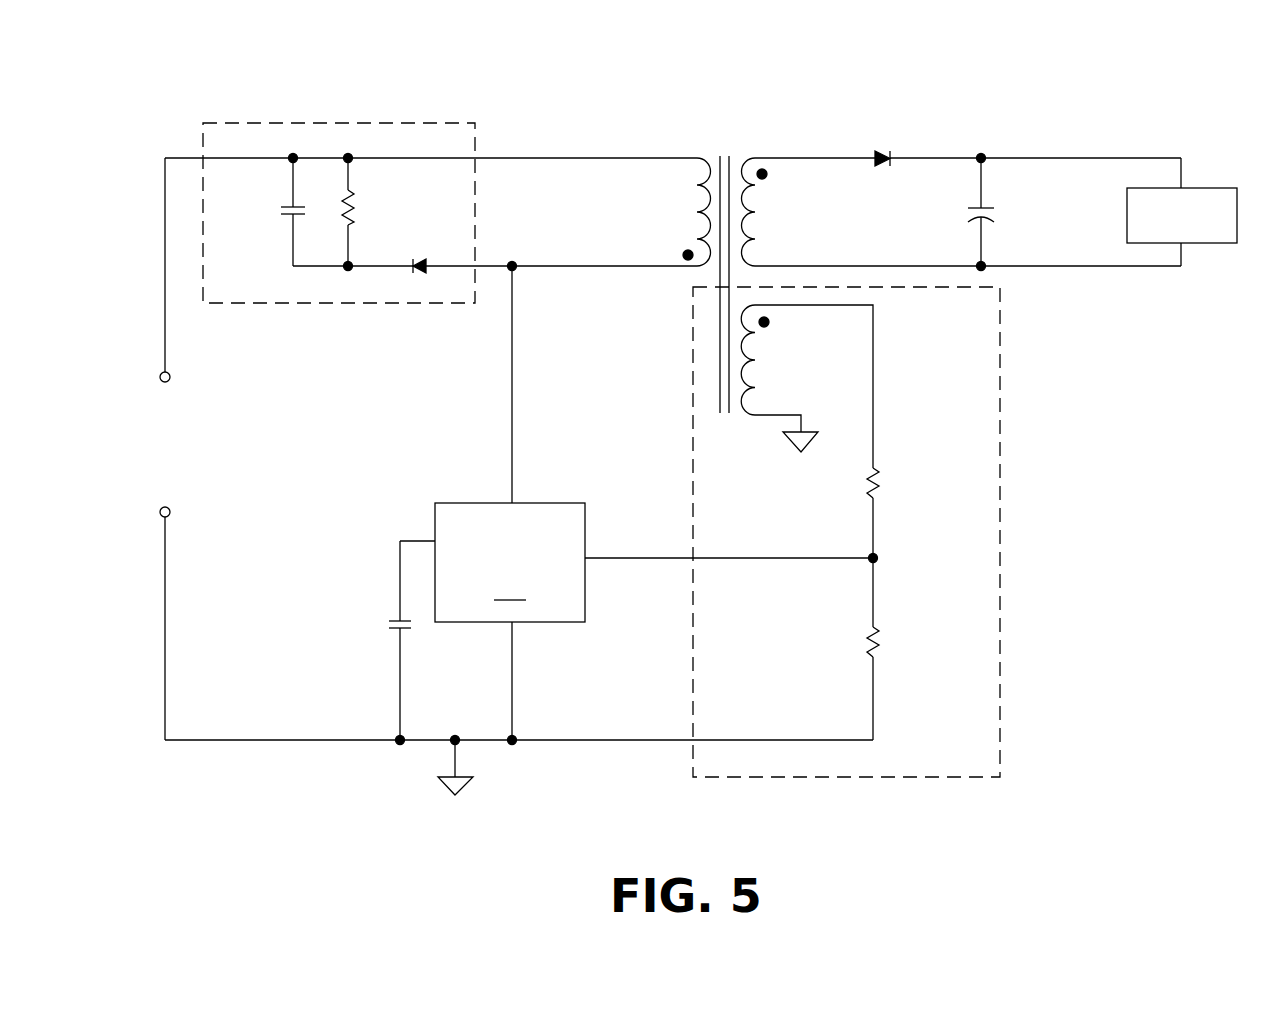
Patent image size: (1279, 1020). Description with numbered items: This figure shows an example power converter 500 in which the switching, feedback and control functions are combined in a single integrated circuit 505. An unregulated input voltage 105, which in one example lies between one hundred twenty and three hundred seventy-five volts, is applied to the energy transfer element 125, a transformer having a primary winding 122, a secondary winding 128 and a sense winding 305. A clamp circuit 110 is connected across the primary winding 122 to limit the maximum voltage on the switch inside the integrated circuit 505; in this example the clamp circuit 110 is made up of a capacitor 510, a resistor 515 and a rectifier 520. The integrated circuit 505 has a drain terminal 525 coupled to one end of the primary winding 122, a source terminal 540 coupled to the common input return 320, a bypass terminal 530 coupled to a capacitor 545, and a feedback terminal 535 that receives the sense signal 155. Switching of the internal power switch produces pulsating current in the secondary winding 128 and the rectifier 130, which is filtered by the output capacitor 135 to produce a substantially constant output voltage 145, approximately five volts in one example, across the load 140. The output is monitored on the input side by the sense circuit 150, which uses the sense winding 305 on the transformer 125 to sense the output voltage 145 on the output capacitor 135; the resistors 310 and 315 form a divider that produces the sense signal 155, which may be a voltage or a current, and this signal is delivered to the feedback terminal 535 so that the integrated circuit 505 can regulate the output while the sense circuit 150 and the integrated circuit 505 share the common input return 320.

The power converter 500 is at (586, 69).
The input voltage V_IN 105 is at (135, 443).
The clamp circuit 110 is at (360, 245).
The capacitor 510 is at (276, 207).
The resistor 515 is at (362, 207).
The rectifier 520 is at (421, 258).
The primary winding 122 is at (682, 209).
The energy transfer element T1 125 is at (728, 147).
The secondary winding 128 is at (775, 210).
The sense winding 305 is at (772, 362).
The rectifier D1 130 is at (882, 143).
The capacitor C1 135 is at (957, 222).
The load 140 is at (1205, 175).
The output voltage V_O 145 is at (1040, 213).
The sense circuit 150 is at (894, 532).
The resistor 310 is at (890, 485).
The resistor 315 is at (893, 648).
The sense signal U_SENSE 155 is at (790, 565).
The integrated circuit 505 is at (510, 562).
The drain terminal 525 is at (502, 488).
The bypass terminal 530 is at (400, 530).
The feedback terminal 535 is at (610, 573).
The source terminal 540 is at (502, 637).
The capacitor 545 is at (380, 622).
The common input return 320 is at (437, 753).